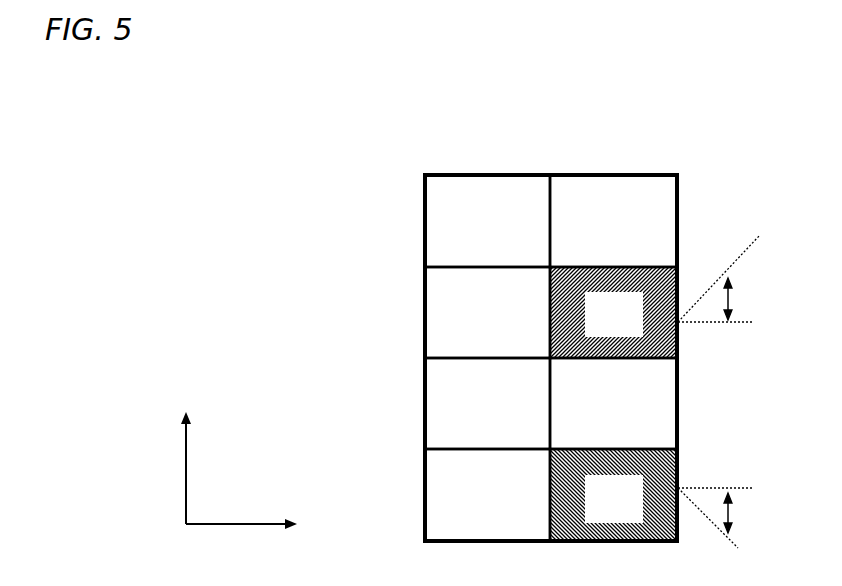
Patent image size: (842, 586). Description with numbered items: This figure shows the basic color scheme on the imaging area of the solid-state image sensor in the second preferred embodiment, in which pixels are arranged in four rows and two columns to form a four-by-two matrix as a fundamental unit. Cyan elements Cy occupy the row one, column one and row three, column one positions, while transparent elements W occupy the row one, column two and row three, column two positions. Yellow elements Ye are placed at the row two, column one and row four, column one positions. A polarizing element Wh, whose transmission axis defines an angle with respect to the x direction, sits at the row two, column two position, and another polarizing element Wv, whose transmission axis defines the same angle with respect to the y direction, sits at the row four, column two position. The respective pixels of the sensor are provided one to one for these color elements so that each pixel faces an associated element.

The cyan element Cy is at (487, 312).
The yellow element Ye is at (487, 404).
The transparent element W is at (613, 312).
The polarizing element Wh is at (613, 312).
The polarizing element Wv is at (613, 495).
The x direction x is at (257, 523).
The y direction y is at (186, 446).